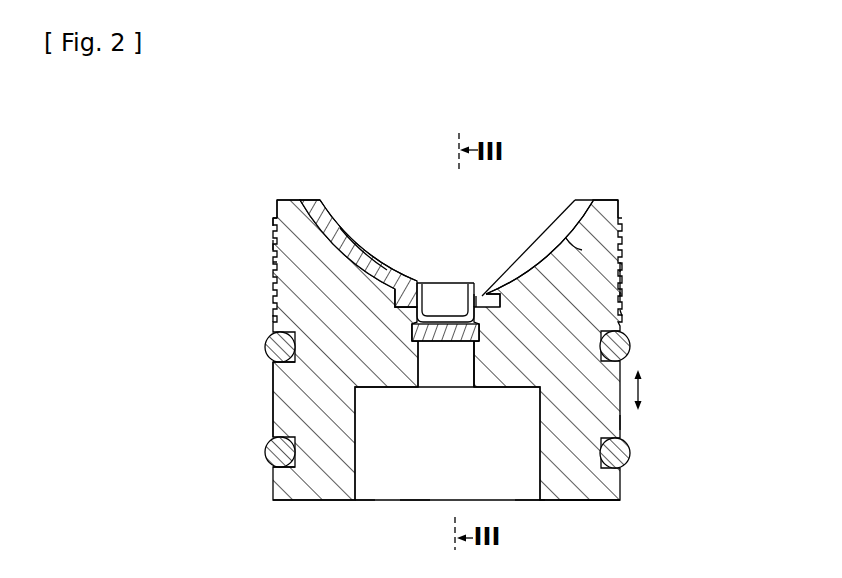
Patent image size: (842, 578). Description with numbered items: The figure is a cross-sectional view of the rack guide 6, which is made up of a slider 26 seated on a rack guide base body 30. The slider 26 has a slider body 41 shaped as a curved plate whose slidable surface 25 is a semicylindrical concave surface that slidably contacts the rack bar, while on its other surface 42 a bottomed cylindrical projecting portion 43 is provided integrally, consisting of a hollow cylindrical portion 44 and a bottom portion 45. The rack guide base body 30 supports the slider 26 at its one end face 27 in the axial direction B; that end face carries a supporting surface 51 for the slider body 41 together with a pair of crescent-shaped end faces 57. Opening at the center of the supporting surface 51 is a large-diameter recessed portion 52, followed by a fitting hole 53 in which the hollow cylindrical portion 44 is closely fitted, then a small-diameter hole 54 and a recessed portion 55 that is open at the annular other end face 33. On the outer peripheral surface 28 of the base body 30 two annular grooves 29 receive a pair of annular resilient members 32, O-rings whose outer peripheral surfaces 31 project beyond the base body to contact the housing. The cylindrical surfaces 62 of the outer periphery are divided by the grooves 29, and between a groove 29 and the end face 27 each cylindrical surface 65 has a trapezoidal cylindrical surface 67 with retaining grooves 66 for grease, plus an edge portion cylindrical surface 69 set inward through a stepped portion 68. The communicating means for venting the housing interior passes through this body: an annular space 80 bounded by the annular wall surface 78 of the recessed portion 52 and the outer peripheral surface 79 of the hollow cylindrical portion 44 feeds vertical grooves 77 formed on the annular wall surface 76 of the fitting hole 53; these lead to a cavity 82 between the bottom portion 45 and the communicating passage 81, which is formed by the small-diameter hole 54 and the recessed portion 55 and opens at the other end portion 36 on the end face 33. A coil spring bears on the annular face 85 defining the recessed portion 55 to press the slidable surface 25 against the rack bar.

The rack guide 6 is at (266, 286).
The slidable surface 25 is at (343, 238).
The slider 26 is at (556, 212).
The one end face 27 is at (284, 190).
The outer peripheral surface 28 is at (264, 405).
The annular grooves 29 is at (630, 345).
The rack guide base body 30 is at (635, 277).
The outer peripheral surfaces 31 is at (265, 347).
The annular resilient members 32 is at (266, 358).
The other end face 33 is at (578, 502).
The other end portion 36 is at (415, 488).
The slider body 41 is at (330, 230).
The other surface 42 is at (568, 243).
The projecting portion 43 is at (426, 388).
The hollow cylindrical portion 44 is at (475, 308).
The bottom portion 45 is at (458, 342).
The supporting surface 51 is at (367, 263).
The large-diameter recessed portion 52 is at (490, 299).
The fitting hole 53 is at (412, 332).
The small-diameter hole 54 is at (446, 342).
The recessed portion 55 is at (528, 480).
The crescent-shaped end faces 57 is at (300, 200).
The cylindrical surfaces 62 is at (265, 242).
The cylindrical surface 65 is at (265, 264).
The retaining grooves 66 is at (273, 318).
The trapezoidal cylindrical surface 67 is at (273, 221).
The stepped portion 68 is at (277, 210).
The edge portion cylindrical surface 69 is at (278, 214).
The annular wall surface 76 is at (480, 345).
The vertical grooves 77 is at (447, 320).
The annular wall surface 78 is at (418, 300).
The outer peripheral surface 79 is at (405, 308).
The annular space 80 is at (493, 297).
The communicating passage 81 is at (363, 510).
The cavity 82 is at (474, 345).
The annular face 85 is at (432, 342).
The axial direction B is at (641, 390).